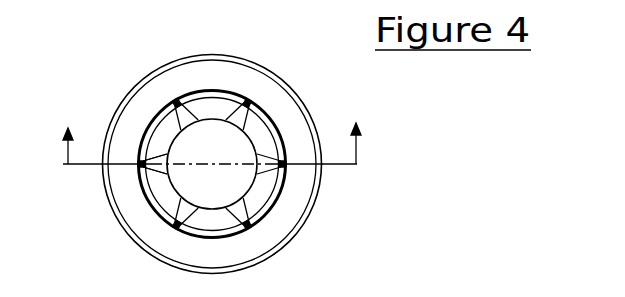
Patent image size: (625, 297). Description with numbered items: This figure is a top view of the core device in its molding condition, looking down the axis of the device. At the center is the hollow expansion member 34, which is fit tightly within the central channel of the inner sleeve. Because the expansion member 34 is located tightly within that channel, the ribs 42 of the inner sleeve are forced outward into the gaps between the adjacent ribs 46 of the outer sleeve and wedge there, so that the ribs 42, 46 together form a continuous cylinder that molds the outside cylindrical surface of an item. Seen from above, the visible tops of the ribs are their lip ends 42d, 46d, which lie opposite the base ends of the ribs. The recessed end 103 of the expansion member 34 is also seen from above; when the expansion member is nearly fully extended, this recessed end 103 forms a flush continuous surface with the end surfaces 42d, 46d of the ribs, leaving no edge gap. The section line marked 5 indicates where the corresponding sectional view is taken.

The recessed end 103 is at (180, 153).
The ribs of the inner sleeve 42 is at (243, 108).
The lip end 42d is at (185, 102).
The ribs of the outer sleeve 46 is at (211, 106).
The lip end 46d is at (160, 140).
The hollow expansion member 34 is at (245, 145).
The section line 5- 5 is at (212, 163).